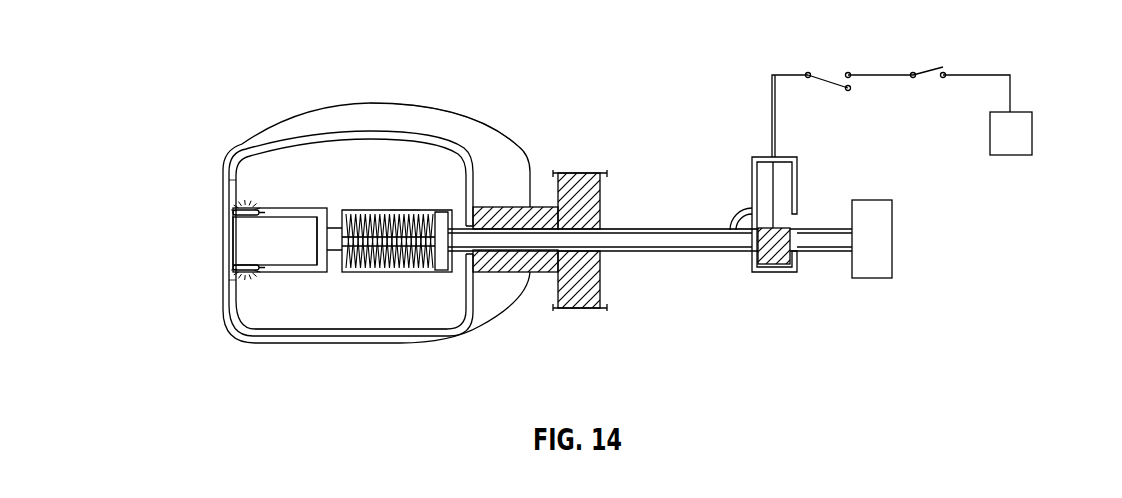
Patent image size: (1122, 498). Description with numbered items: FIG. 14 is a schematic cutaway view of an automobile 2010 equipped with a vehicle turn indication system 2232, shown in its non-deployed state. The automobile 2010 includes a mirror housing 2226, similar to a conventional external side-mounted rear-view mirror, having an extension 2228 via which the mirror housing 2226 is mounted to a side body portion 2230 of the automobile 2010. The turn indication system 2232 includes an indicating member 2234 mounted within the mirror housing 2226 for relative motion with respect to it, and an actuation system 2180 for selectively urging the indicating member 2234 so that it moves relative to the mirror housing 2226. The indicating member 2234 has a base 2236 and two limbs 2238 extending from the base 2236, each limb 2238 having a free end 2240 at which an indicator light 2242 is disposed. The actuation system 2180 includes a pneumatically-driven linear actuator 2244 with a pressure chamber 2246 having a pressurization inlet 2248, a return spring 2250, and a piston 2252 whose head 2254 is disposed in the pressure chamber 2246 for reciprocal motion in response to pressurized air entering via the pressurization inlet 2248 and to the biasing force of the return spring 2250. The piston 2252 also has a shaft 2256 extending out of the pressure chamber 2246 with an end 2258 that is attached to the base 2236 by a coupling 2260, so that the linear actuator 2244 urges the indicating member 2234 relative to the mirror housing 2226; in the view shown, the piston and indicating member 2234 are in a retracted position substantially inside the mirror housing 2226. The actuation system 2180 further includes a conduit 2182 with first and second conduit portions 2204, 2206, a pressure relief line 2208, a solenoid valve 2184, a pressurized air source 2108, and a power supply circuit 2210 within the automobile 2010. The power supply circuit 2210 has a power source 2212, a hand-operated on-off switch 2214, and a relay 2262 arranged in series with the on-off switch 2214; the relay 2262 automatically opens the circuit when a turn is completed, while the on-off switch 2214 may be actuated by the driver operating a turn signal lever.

The automobile 2010 is at (582, 105).
The pressurized air source 2108 is at (887, 236).
The actuation system 2180 is at (440, 176).
The conduit 2182 is at (641, 217).
The solenoid valve 2184 is at (802, 138).
The first conduit portion 2204 is at (833, 252).
The second conduit portion 2206 is at (635, 252).
The pressure relief line 2208 is at (751, 195).
The power supply circuit 2210 is at (838, 45).
The power source 2212 is at (1028, 133).
The hand-operated on-off switch 2214 is at (937, 69).
The mirror housing 2226 is at (290, 113).
The extension 2228 is at (525, 273).
The side body portion 2230 is at (593, 295).
The turn indication system 2232 is at (616, 189).
The indicating member 2234 is at (297, 294).
The base 2236 is at (285, 272).
The limbs 2238 is at (240, 150).
The free end 2240 is at (236, 185).
The indicator light 2242 is at (231, 212).
The pneumatically-driven linear actuator 2244 is at (401, 170).
The pressure chamber 2246 is at (380, 205).
The pressurization inlet 2248 is at (462, 205).
The return spring 2250 is at (420, 273).
The piston 2252 is at (380, 265).
The head 2254 is at (447, 272).
The shaft 2256 is at (402, 207).
The end 2258 is at (325, 215).
The coupling 2260 is at (317, 245).
The relay 2262 is at (817, 72).